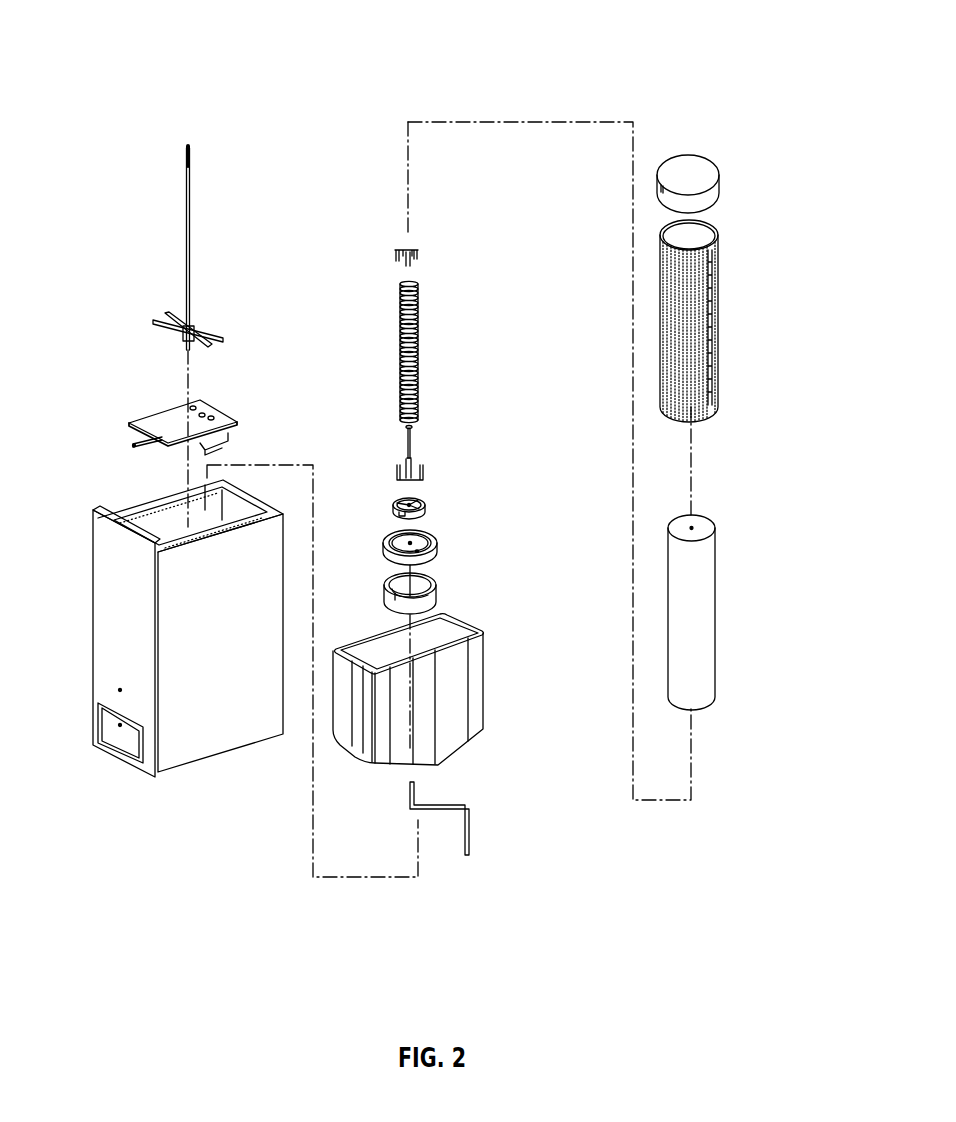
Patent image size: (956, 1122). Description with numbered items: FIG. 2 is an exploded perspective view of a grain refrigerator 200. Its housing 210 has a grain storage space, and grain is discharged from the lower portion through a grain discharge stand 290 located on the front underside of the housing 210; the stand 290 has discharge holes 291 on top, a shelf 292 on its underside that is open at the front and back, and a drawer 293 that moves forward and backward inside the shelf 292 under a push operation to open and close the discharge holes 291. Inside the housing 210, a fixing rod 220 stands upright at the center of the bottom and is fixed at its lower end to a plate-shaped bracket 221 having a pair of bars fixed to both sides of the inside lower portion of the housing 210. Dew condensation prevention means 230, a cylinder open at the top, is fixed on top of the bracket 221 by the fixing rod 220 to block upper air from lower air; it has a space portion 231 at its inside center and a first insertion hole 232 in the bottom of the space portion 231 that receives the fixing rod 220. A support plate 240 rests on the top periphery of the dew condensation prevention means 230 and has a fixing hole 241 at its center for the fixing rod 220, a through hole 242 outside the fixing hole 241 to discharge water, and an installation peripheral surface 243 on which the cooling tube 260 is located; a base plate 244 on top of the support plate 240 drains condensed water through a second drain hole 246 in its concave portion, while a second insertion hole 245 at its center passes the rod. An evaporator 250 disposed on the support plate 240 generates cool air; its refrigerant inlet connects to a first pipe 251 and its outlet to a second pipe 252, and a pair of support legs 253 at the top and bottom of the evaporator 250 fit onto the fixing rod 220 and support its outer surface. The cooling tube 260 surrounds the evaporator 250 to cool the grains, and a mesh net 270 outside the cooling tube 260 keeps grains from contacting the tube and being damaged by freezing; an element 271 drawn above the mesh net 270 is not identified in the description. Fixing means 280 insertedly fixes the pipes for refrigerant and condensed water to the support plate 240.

The grain refrigerator 200 is at (318, 26).
The housing 210 is at (460, 690).
The fixing rod 220 is at (186, 221).
The bracket 221 is at (154, 322).
The dew condensation prevention means 230 is at (409, 598).
The space portion 231 is at (392, 580).
The first insertion hole 232 is at (420, 595).
The support plate 240 is at (409, 555).
The fixing hole 241 is at (413, 544).
The through hole 242 is at (419, 553).
The installation peripheral surface 243 is at (386, 551).
The base plate 244 is at (410, 512).
The second insertion hole 245 is at (414, 506).
The second drain hole 246 is at (420, 513).
The evaporator 250 is at (419, 355).
The first pipe 251 is at (412, 448).
The second pipe 252 is at (412, 432).
The support legs 253 is at (420, 254).
The cooling tube 260 is at (706, 609).
The mesh net 270 is at (719, 338).
The cap 271 is at (708, 183).
The fixing means 280 is at (470, 826).
The grain discharge stand 290 is at (182, 423).
The discharge holes 291 is at (203, 404).
The shelf 292 is at (222, 436).
The drawer 293 is at (190, 442).